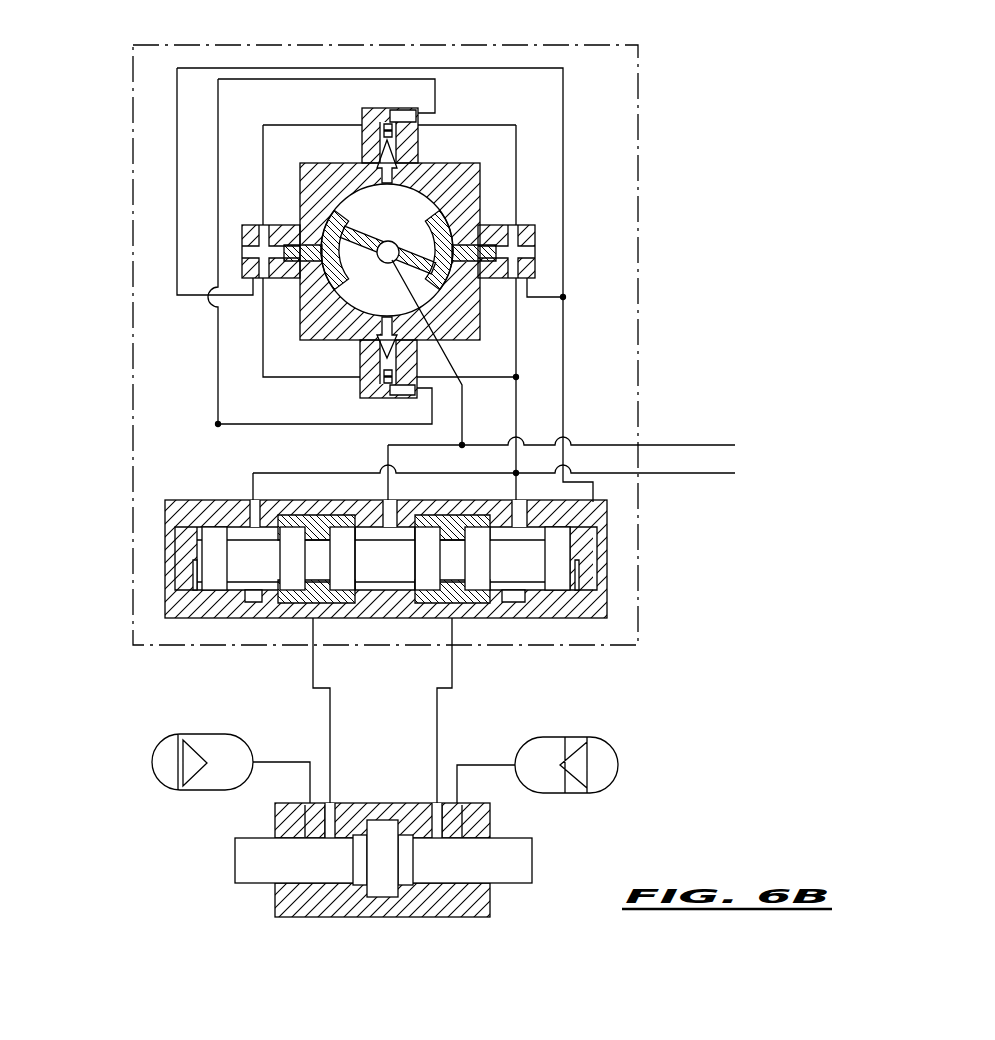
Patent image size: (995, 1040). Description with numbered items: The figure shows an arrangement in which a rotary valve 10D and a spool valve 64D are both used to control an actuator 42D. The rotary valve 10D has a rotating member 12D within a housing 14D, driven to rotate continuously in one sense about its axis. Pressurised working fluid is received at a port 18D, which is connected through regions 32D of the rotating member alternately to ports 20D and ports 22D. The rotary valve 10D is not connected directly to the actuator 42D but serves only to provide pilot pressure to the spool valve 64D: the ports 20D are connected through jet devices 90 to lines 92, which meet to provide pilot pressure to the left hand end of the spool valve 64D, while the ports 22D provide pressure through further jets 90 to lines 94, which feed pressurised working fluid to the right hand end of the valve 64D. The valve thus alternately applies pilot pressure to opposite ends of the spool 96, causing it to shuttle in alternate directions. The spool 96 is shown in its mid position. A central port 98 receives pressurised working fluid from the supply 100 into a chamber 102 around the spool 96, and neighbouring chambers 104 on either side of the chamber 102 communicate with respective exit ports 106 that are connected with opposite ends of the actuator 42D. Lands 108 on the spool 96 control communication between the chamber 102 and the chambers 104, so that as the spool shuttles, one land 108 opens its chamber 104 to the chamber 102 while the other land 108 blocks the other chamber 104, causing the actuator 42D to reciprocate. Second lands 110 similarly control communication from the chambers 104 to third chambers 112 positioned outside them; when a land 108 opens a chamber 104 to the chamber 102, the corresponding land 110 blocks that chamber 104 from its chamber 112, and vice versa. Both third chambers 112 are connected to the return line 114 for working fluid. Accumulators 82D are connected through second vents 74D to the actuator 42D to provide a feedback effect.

The rotary valve 10D is at (265, 185).
The rotating member 12D is at (410, 290).
The housing 14D is at (300, 335).
The port 18D is at (447, 352).
The ports 20D is at (353, 162).
The ports 22D is at (293, 232).
The regions 32D is at (350, 208).
The actuator 42D is at (276, 910).
The spool valve 64D is at (308, 490).
The second vents 74D is at (310, 808).
The accumulators 82D is at (157, 779).
The jet devices 90 is at (352, 116).
The lines 92 is at (436, 108).
The lines 94 is at (176, 268).
The spool 96 is at (412, 566).
The central port 98 is at (385, 498).
The supply 100 is at (690, 440).
The chamber 102 is at (382, 590).
The neighbouring chambers 104 is at (290, 595).
The exit ports 106 is at (320, 598).
The lands 108 is at (346, 578).
The second lands 110 is at (290, 565).
The third chambers 112 is at (249, 600).
The return line 114 is at (688, 476).